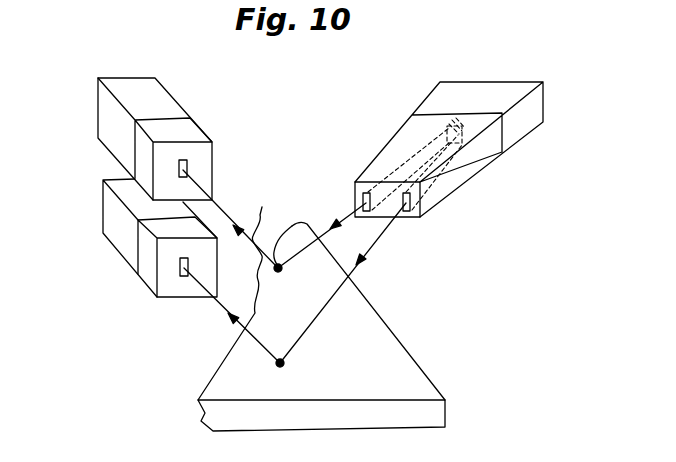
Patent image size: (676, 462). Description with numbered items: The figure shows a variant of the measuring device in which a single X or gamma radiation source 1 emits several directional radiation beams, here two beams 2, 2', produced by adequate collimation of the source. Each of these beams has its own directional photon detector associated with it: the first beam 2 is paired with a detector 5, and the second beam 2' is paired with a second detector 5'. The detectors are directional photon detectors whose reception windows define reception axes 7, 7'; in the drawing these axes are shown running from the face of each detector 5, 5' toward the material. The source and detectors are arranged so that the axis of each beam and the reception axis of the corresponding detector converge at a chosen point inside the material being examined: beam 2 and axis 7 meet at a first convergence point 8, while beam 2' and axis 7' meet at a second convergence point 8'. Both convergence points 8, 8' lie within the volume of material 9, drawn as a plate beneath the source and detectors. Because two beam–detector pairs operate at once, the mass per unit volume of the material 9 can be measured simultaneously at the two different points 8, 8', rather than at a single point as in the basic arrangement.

The radiation source 1 is at (412, 100).
The directional beam 2 is at (347, 283).
The directional beam 2' is at (322, 220).
The directional photon detector 5 is at (140, 238).
The directional photon detector 5' is at (155, 119).
The axis 7 is at (232, 315).
The axis 7' is at (230, 219).
The convergence point 8 is at (297, 373).
The convergence point 8' is at (291, 268).
The volume of material 9 is at (403, 362).